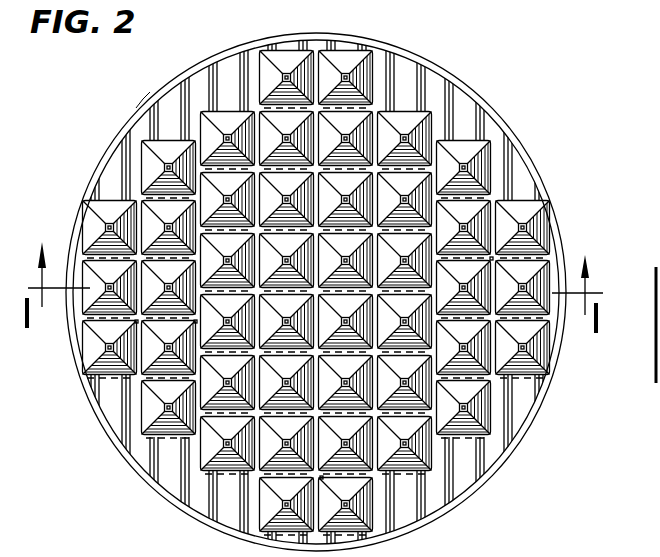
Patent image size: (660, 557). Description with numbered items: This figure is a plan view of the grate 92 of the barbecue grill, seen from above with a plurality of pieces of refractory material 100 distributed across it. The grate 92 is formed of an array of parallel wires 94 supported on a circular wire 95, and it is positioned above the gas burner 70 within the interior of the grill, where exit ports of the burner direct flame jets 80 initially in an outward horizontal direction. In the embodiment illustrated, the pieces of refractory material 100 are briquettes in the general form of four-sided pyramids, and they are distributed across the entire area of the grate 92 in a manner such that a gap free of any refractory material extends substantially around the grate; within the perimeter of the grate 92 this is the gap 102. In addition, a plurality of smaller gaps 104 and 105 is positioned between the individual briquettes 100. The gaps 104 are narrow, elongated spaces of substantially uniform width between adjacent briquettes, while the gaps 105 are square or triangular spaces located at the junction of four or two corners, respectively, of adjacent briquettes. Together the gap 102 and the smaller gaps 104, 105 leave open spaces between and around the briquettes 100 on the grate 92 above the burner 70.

The gas burner 70 is at (505, 556).
The flame jets 80 is at (228, 556).
The grate 92 is at (506, 104).
The parallel wires 94 is at (418, 58).
The circular wire 95 is at (143, 97).
The pieces of refractory material 100 is at (473, 416).
The gap 102 is at (210, 60).
The gaps 104 is at (437, 257).
The gaps 105 is at (482, 262).